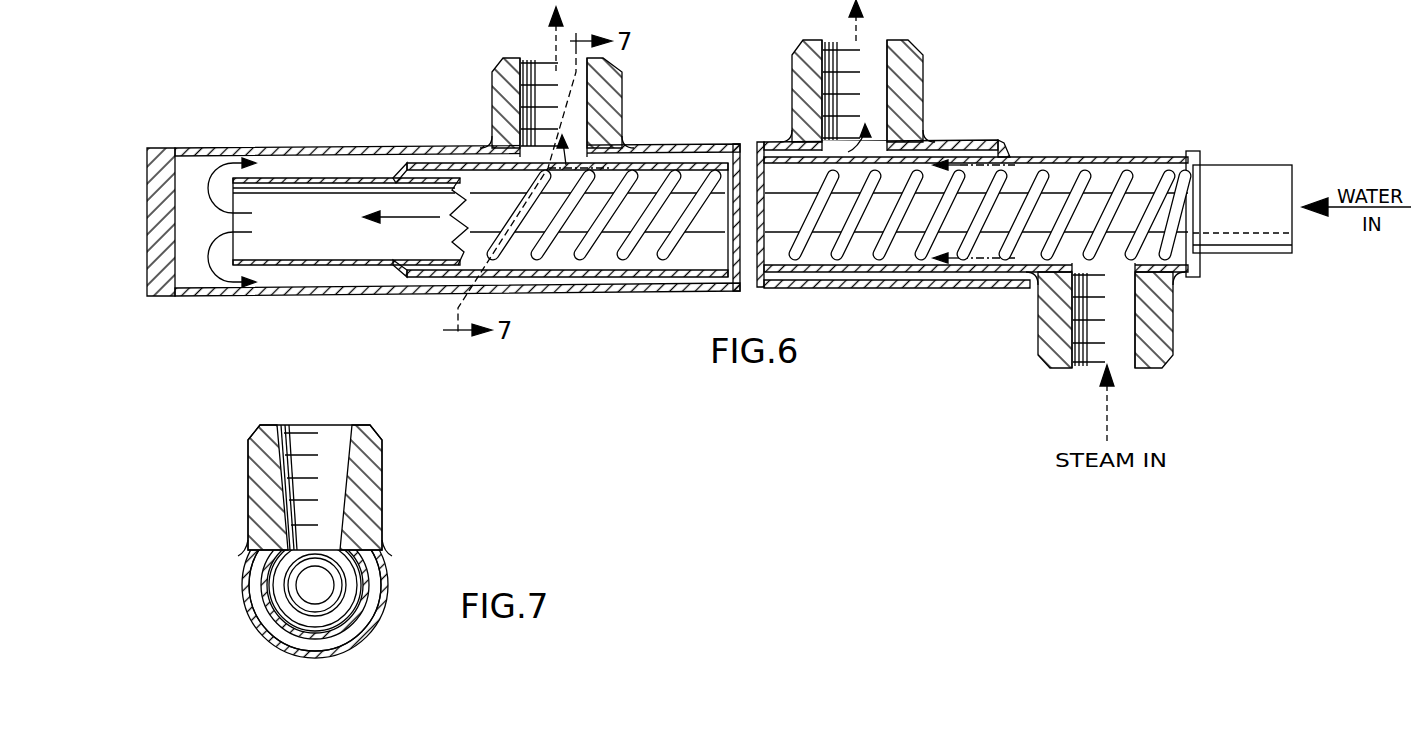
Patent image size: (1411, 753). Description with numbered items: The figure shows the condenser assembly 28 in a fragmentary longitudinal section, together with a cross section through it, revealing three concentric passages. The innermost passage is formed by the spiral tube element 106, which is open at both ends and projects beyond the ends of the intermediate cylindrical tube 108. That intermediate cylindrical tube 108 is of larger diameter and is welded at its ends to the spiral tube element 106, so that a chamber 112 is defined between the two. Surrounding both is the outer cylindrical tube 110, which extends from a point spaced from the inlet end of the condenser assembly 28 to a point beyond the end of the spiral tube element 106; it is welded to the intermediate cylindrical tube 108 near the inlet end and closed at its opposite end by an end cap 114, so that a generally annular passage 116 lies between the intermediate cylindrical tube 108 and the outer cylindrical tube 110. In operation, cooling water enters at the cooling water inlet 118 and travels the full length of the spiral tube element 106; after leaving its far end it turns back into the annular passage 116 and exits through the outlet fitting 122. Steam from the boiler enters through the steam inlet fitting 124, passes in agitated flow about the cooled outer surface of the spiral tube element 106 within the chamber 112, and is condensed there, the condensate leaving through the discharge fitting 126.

In FIG. 6, the condenser assembly 28 is at (668, 298).
In FIG. 6, the spiral tube element 106 is at (1133, 170).
In FIG. 7, the spiral tube element 106 is at (362, 583).
In FIG. 6, the intermediate cylindrical tube 108 is at (1052, 157).
In FIG. 7, the intermediate cylindrical tube 108 is at (370, 598).
In FIG. 6, the outer cylindrical tube 110 is at (978, 142).
In FIG. 7, the outer cylindrical tube 110 is at (380, 620).
In FIG. 6, the chamber 112 is at (862, 255).
In FIG. 7, the chamber 112 is at (267, 600).
In FIG. 6, the end cap 114 is at (148, 203).
In FIG. 6, the annular passage 116 is at (848, 280).
In FIG. 7, the annular passage 116 is at (252, 583).
In FIG. 6, the cooling water inlet 118 is at (1292, 170).
In FIG. 6, the outlet fitting 122 is at (923, 62).
In FIG. 6, the steam inlet fitting 124 is at (1173, 306).
In FIG. 6, the discharge fitting 126 is at (492, 86).
In FIG. 7, the discharge fitting 126 is at (382, 478).